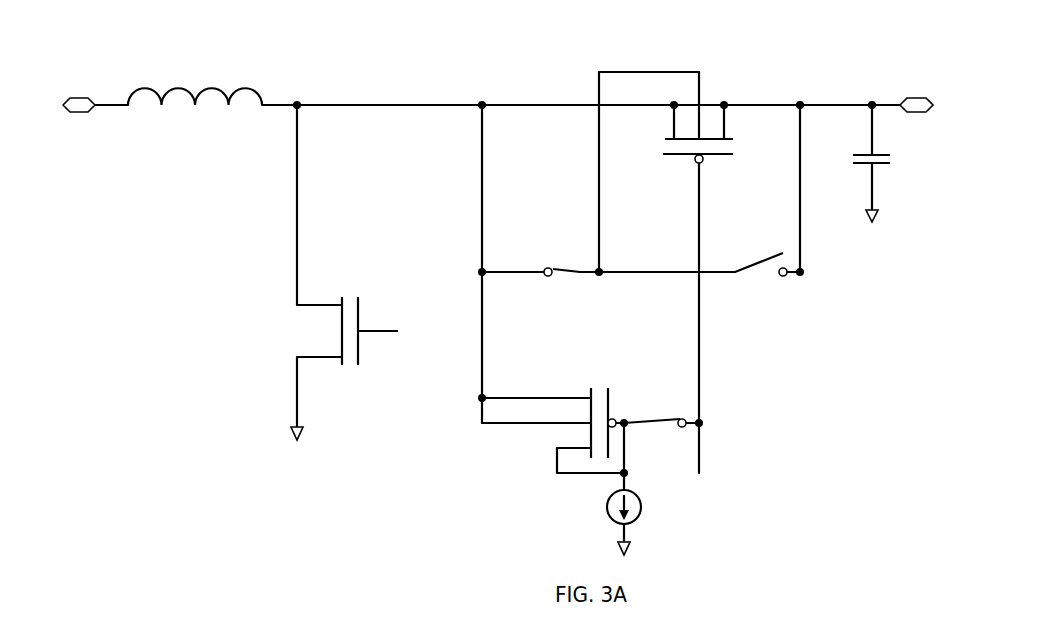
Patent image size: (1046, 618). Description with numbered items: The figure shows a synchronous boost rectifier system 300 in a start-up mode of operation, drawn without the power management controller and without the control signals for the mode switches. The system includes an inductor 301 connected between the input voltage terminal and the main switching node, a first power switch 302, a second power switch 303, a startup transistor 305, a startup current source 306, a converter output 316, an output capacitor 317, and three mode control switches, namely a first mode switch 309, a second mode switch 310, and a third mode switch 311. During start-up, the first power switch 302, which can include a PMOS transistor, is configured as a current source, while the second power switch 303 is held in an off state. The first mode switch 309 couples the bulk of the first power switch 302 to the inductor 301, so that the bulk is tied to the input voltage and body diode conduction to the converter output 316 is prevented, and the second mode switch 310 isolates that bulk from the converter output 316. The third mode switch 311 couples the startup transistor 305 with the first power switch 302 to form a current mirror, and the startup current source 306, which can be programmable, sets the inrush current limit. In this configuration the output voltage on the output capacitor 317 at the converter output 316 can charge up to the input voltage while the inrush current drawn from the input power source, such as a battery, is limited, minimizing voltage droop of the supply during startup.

The synchronous boost rectifier system 300 is at (502, 284).
The inductor 301 is at (197, 106).
The first power switch 302 is at (715, 156).
The second power switch 303 is at (358, 350).
The startup transistor 305 is at (610, 410).
The startup current source 306 is at (607, 507).
The first mode switch 309 is at (577, 268).
The second mode switch 310 is at (767, 263).
The third mode switch 311 is at (647, 420).
The converter output 316 is at (904, 33).
The output capacitor 317 is at (880, 165).